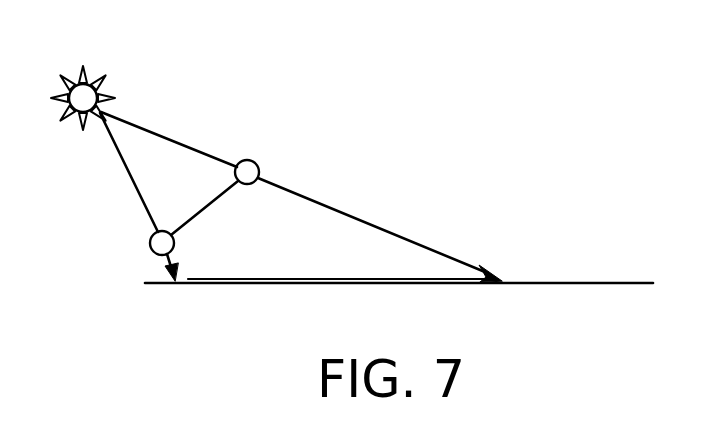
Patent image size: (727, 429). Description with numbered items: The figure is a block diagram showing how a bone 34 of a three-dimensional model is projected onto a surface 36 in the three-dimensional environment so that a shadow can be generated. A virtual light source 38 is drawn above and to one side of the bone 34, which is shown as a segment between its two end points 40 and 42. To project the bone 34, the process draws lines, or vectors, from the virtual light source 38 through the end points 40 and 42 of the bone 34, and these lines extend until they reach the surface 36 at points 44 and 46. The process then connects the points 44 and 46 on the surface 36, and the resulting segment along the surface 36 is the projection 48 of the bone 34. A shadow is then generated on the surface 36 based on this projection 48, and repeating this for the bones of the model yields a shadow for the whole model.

The bone 34 is at (207, 206).
The surface 36 is at (536, 280).
The virtual light source 38 is at (74, 82).
The end point 40 is at (149, 244).
The end point 42 is at (256, 159).
The point 44 is at (506, 278).
The point 46 is at (181, 279).
The projection 48 is at (297, 278).